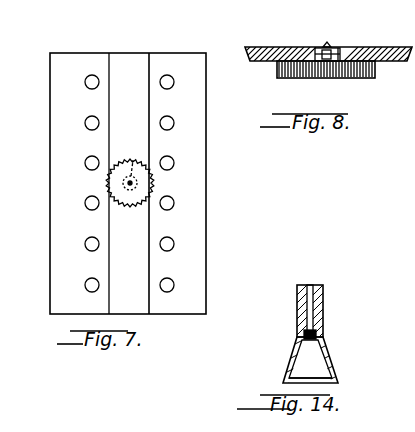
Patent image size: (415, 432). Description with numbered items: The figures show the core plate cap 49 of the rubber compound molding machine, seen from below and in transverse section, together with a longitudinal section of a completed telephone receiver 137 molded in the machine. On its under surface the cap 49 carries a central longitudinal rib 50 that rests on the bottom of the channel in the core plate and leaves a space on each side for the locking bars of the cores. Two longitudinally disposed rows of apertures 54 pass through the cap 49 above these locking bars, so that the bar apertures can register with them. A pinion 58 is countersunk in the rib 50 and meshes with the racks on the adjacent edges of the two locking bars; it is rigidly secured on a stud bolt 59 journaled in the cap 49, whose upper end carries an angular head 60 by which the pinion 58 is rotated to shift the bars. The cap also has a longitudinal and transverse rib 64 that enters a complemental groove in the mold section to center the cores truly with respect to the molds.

In FIG. 7, the cap 49 is at (182, 57).
In FIG. 8, the cap 49 is at (258, 57).
In FIG. 7, the central longitudinal rib 50 is at (117, 93).
In FIG. 7, the apertures 54 is at (87, 164).
In FIG. 7, the pinion 58 is at (146, 176).
In FIG. 8, the pinion 58 is at (284, 80).
In FIG. 7, the stud bolt 59 is at (137, 183).
In FIG. 8, the stud bolt 59 is at (352, 47).
In FIG. 7, the angular head 60 is at (133, 160).
In FIG. 8, the angular head 60 is at (333, 47).
In FIG. 8, the longitudinal and transverse rib 64 is at (318, 47).
In FIG. 14, the receiver 137 is at (323, 321).